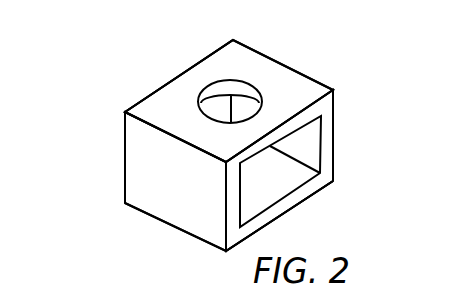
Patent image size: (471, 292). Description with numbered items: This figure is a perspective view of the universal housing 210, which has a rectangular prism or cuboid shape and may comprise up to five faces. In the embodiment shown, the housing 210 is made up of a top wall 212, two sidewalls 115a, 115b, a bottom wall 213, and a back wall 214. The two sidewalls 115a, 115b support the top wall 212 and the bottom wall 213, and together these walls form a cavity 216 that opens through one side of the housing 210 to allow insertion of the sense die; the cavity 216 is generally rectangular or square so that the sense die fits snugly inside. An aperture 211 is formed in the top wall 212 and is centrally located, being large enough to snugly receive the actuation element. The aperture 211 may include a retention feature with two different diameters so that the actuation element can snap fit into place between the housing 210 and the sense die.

The housing 210 is at (314, 69).
The aperture 211 is at (188, 70).
The top wall 212 is at (248, 68).
The bottom wall 213 is at (273, 219).
The back wall 214 is at (197, 82).
The cavity 216 is at (318, 171).
The sidewall 115a is at (167, 172).
The sidewall 115b is at (332, 113).